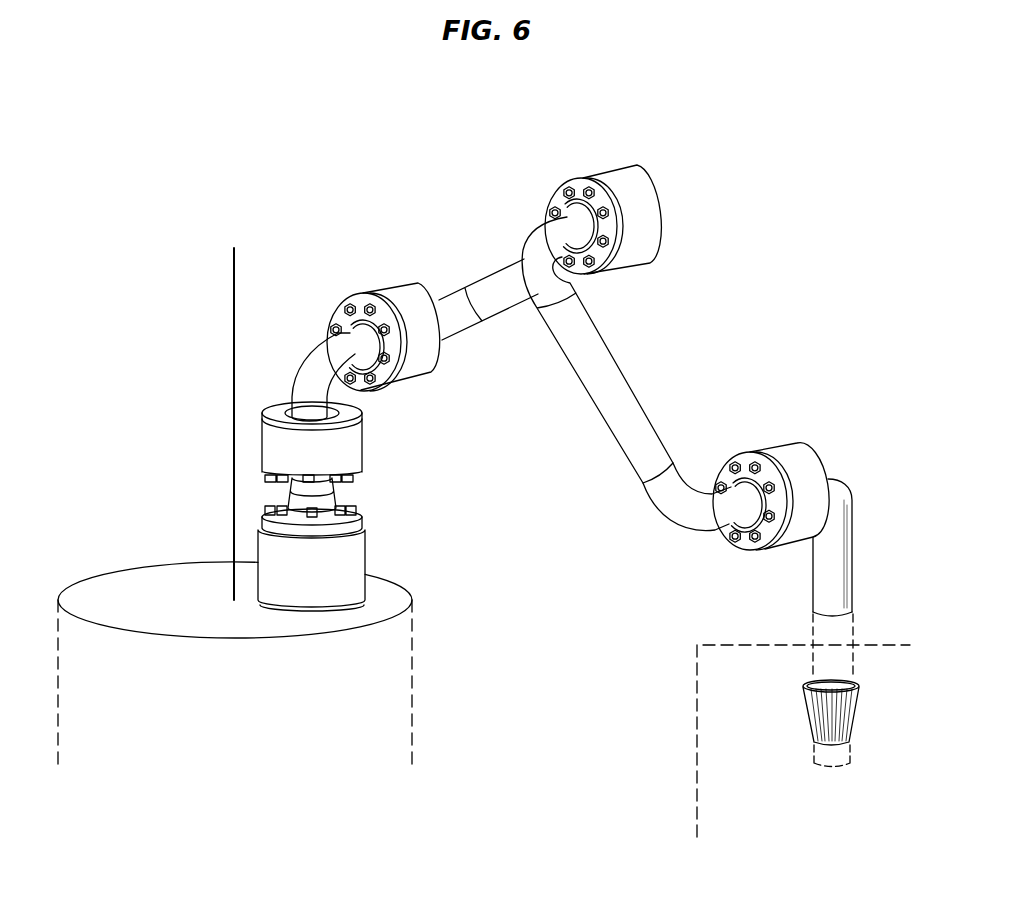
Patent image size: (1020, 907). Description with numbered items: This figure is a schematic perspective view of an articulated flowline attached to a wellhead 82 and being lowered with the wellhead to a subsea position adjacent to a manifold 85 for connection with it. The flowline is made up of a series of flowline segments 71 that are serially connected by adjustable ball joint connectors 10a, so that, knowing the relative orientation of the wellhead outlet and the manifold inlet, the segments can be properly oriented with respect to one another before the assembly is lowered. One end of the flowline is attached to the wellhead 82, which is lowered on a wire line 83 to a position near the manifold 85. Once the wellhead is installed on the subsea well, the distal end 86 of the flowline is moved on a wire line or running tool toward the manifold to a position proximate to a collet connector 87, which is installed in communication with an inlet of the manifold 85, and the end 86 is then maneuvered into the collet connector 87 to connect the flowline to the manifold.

The adjustable ball joint connector 10a is at (369, 291).
The flowline segment 71 is at (298, 364).
The wellhead 82 is at (380, 667).
The wire line 83 is at (234, 352).
The manifold 85 is at (733, 748).
The distal end of the flowline 86 is at (853, 613).
The collet connector 87 is at (856, 713).